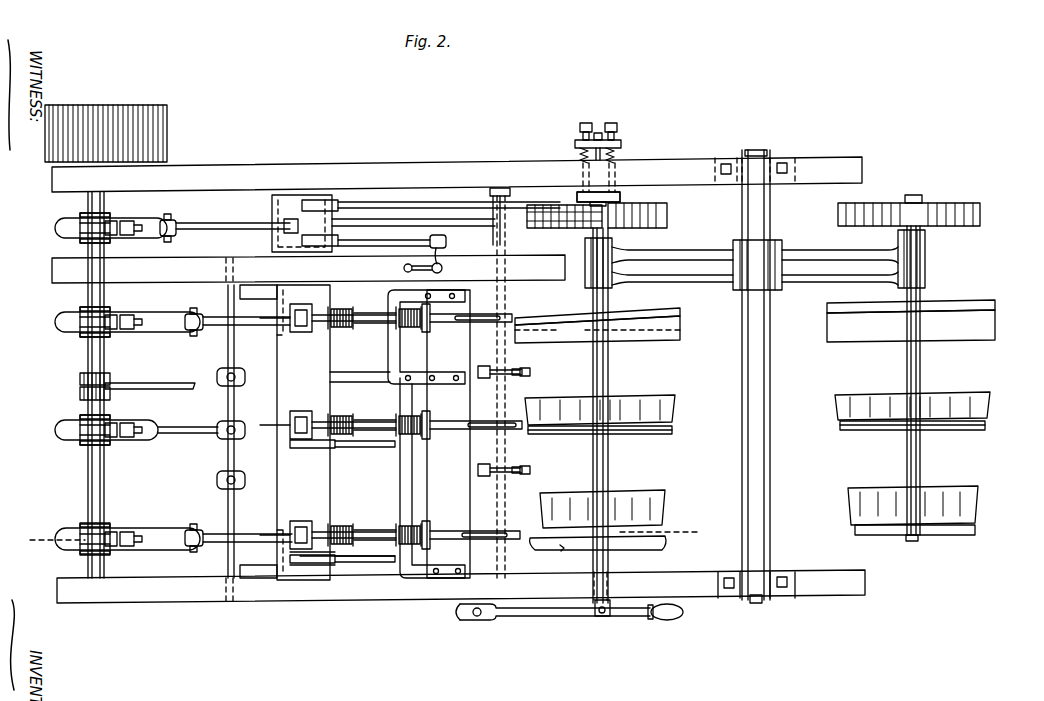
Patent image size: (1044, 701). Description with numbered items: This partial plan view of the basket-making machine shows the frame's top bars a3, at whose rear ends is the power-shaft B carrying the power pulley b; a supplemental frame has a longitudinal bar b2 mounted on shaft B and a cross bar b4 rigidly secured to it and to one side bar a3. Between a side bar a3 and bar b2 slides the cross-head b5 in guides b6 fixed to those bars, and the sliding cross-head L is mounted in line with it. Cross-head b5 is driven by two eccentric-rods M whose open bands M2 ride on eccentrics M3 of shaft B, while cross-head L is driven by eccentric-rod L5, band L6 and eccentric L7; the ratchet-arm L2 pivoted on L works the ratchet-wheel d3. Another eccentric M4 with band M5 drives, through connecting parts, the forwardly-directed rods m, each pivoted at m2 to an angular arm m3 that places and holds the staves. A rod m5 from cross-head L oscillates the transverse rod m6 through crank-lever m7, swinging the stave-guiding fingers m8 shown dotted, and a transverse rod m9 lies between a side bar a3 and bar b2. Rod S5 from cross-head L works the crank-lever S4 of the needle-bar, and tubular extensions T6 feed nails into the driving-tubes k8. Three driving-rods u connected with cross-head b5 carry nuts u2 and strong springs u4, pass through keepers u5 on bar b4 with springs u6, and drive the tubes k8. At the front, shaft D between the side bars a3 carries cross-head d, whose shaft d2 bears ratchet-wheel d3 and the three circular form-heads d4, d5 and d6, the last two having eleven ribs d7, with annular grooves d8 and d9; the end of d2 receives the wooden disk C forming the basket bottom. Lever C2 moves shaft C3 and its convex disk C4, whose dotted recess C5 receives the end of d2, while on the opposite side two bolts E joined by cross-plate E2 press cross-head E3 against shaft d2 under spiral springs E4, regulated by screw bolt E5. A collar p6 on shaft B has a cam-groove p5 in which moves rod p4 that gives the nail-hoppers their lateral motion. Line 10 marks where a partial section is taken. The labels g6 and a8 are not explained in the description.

The top bar a3 is at (676, 168).
The power wheel or pulley b is at (167, 135).
The longitudinal bar b2 is at (308, 269).
The power-shaft B is at (106, 356).
The sliding cross-head L is at (285, 195).
The ratchet-arm L2 is at (375, 219).
The eccentric-rod L5 is at (200, 224).
The open ring or band L6 is at (68, 228).
The eccentric L7 is at (78, 218).
The rod m5 is at (345, 202).
The cross-rod m6 is at (575, 196).
The crank-lever m7 is at (496, 190).
The fingers m8 is at (237, 404).
The transverse rod m9 is at (528, 290).
The forwardly-directed rods m is at (358, 378).
The pivot connection m2 is at (482, 366).
The angular arm m3 is at (525, 376).
The crank-lever S4 is at (448, 250).
The rod S5 is at (395, 240).
The tubular extension T6 is at (495, 285).
The bolts E is at (578, 129).
The cross-plate E2 is at (573, 144).
The cross-head E3 is at (580, 194).
The spiral springs E4 is at (596, 168).
The screw-threaded bolt E5 is at (598, 133).
The cross-head d is at (690, 258).
The shaft d2 is at (609, 463).
The ratchet-wheel d3 is at (668, 212).
The circular head d4 is at (682, 330).
The circular head d5 is at (674, 412).
The circular head d6 is at (664, 502).
The transverse ribs or flanges d7 is at (635, 398).
The annular groove d8 is at (655, 312).
The annular groove d9 is at (668, 430).
The shaft D is at (771, 420).
The eccentric-rods M is at (210, 330).
The open rings or bands M2 is at (68, 322).
The eccentrics M3 is at (80, 334).
The eccentric M4 is at (82, 443).
The open ring or band M5 is at (70, 430).
The rod p4 is at (165, 388).
The cam-groove p5 is at (80, 380).
The collar p6 is at (110, 395).
The driving-rods u is at (362, 324).
The nuts u2 is at (298, 326).
The spiral springs u4 is at (340, 308).
The keepers u5 is at (408, 330).
The springs u6 is at (430, 612).
The driving-tubes k8 is at (448, 547).
The cross plate or bar b4 is at (448, 434).
The sliding cross-head b5 is at (303, 432).
The guides b6 is at (330, 287).
The bar g6 is at (350, 566).
The plate a8 is at (660, 294).
The circular wooden disk or plate C is at (955, 537).
The lever C2 is at (545, 616).
The shaft C3 is at (608, 563).
The disk C4 is at (662, 548).
The cavity or recess C5 is at (590, 544).
The section line 10 is at (371, 536).